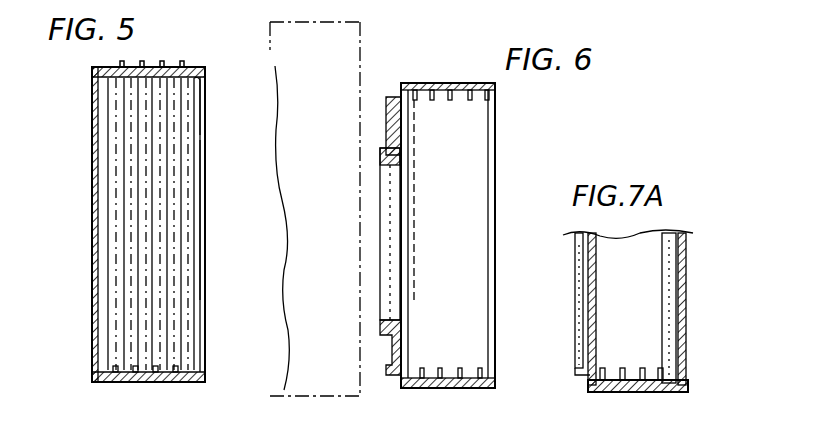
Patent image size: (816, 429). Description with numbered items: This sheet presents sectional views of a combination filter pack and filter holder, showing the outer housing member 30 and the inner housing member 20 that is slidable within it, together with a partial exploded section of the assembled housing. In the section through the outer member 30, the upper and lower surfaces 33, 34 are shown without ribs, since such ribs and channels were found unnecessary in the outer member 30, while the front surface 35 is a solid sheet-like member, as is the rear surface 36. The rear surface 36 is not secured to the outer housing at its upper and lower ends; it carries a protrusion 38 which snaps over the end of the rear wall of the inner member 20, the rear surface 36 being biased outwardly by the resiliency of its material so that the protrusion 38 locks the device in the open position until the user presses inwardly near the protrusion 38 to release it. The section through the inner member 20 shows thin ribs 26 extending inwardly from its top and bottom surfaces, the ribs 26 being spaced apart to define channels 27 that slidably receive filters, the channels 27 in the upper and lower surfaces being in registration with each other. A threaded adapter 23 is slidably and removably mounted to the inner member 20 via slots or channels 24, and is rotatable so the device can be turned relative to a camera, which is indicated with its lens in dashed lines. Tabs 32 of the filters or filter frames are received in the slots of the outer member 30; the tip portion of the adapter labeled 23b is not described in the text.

In FIG. 6, the inner housing member 20 is at (478, 82).
In FIG. 6, the threaded adapter 23 is at (393, 122).
In FIG. 6, the contact tip 23b is at (388, 150).
In FIG. 6, the slots or channels 24 is at (395, 97).
In FIG. 6, the ribs 26 is at (432, 102).
In FIG. 6, the channels 27 is at (475, 102).
In FIG. 5, the outer housing member 30 is at (90, 181).
In FIG. 7A, the outer housing member 30 is at (642, 392).
In FIG. 5, the tabs 32 is at (26, 428).
In FIG. 5, the upper surface 33 is at (98, 78).
In FIG. 5, the lower surface 34 is at (100, 370).
In FIG. 5, the front surface 35 is at (92, 268).
In FIG. 5, the rear surface 36 is at (196, 136).
In FIG. 5, the protrusion 38 is at (198, 224).